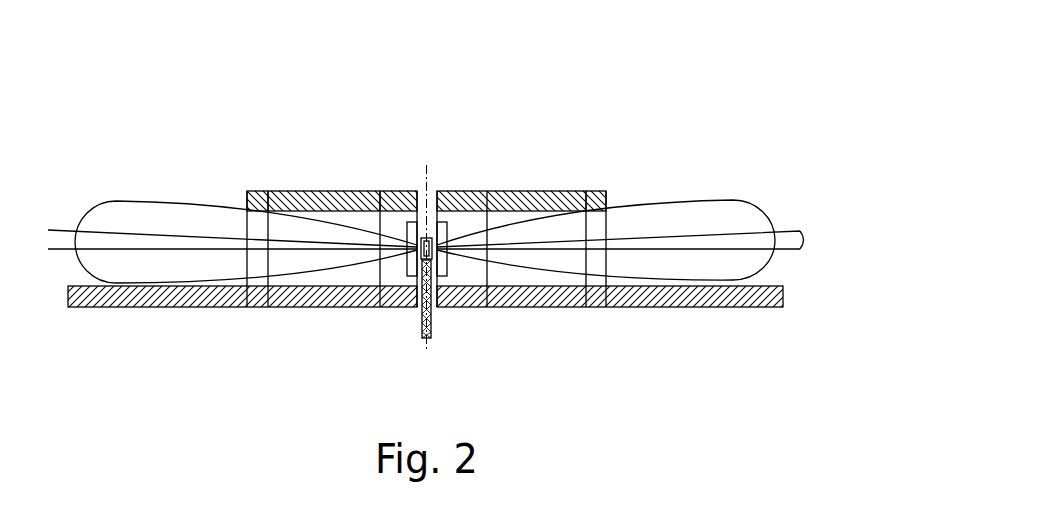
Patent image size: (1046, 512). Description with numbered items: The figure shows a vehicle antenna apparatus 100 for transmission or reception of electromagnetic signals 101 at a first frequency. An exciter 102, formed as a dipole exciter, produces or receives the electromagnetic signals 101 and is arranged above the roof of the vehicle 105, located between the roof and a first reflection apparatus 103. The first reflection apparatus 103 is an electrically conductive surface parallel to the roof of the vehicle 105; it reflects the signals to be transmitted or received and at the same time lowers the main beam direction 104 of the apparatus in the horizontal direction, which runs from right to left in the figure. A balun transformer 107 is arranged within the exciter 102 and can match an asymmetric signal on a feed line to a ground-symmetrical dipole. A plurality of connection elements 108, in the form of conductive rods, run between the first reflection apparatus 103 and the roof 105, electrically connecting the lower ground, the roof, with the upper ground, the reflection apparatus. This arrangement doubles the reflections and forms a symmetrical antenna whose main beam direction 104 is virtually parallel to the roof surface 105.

The vehicle antenna apparatus 100 is at (733, 114).
The electromagnetic signals 101 is at (116, 222).
The exciter 102 is at (449, 225).
The first reflection apparatus 103 is at (282, 191).
The main beam direction 104 is at (790, 242).
The roof of the vehicle 105 is at (140, 296).
The balun transformer 107 is at (406, 228).
The connection elements 108 is at (600, 235).